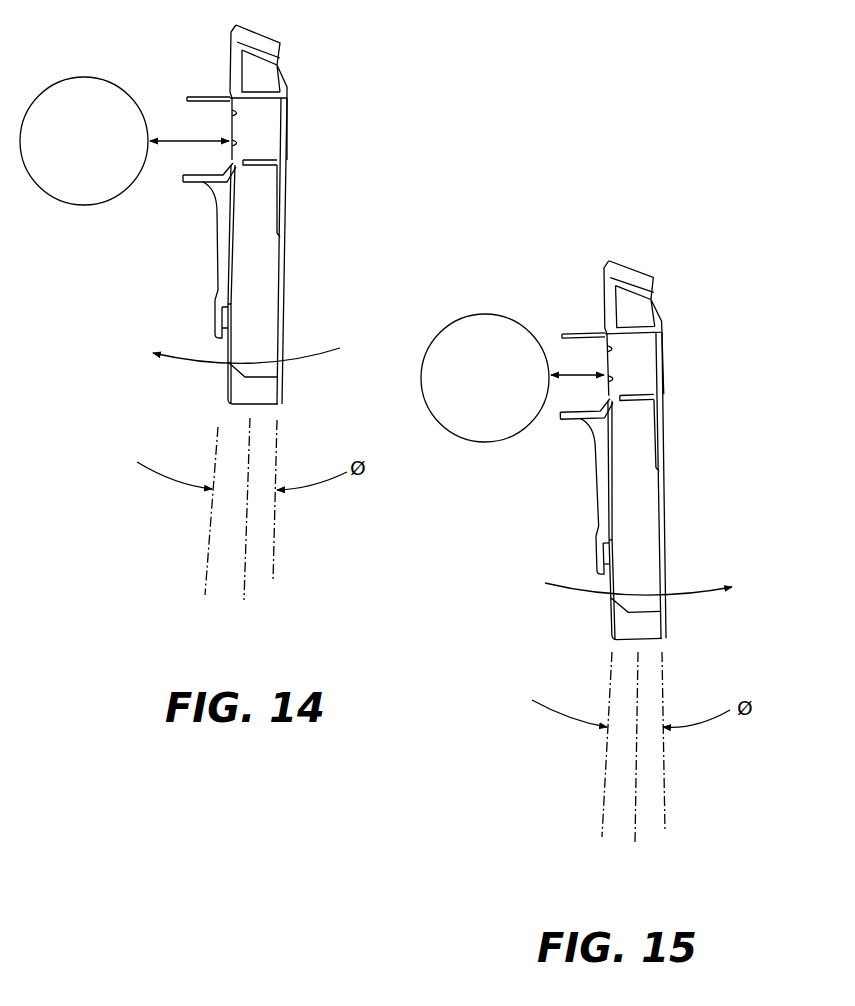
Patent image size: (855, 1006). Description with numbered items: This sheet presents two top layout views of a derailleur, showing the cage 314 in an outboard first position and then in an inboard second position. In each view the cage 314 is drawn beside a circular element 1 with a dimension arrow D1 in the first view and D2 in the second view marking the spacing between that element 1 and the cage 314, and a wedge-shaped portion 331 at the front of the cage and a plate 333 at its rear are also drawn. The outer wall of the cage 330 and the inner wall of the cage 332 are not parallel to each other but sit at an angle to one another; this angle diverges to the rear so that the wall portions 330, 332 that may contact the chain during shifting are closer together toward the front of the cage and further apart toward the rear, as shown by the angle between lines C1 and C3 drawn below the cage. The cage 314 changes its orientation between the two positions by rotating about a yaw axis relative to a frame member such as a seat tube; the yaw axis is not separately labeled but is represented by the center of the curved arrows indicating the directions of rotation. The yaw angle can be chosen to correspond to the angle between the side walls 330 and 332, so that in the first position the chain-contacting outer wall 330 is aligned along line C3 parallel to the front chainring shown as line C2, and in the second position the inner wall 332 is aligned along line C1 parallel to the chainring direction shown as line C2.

In FIG. 14, the photosensitive drum 1 is at (113, 82).
In FIG. 15, the photosensitive drum 1 is at (487, 313).
In FIG. 14, the outer wall of the cage 330 is at (285, 268).
In FIG. 15, the outer wall of the cage 330 is at (692, 485).
In FIG. 14, the cleaning blade support plate 331 is at (275, 52).
In FIG. 15, the cleaning blade support plate 331 is at (648, 283).
In FIG. 14, the inner wall of the cage 332 is at (277, 233).
In FIG. 15, the inner wall of the cage 332 is at (608, 473).
In FIG. 14, the bottom plate 333 is at (283, 394).
In FIG. 15, the bottom plate 333 is at (667, 598).
In FIG. 14, the cage 314 is at (280, 133).
In FIG. 15, the cage 314 is at (655, 365).
In FIG. 14, the distance D1 is at (189, 127).
In FIG. 15, the distance D2 is at (577, 362).
In FIG. 14, the line C1 is at (206, 525).
In FIG. 15, the line C1 is at (603, 759).
In FIG. 14, the line C2 is at (243, 525).
In FIG. 15, the line C2 is at (638, 762).
In FIG. 14, the line C3 is at (278, 516).
In FIG. 15, the line C3 is at (671, 755).